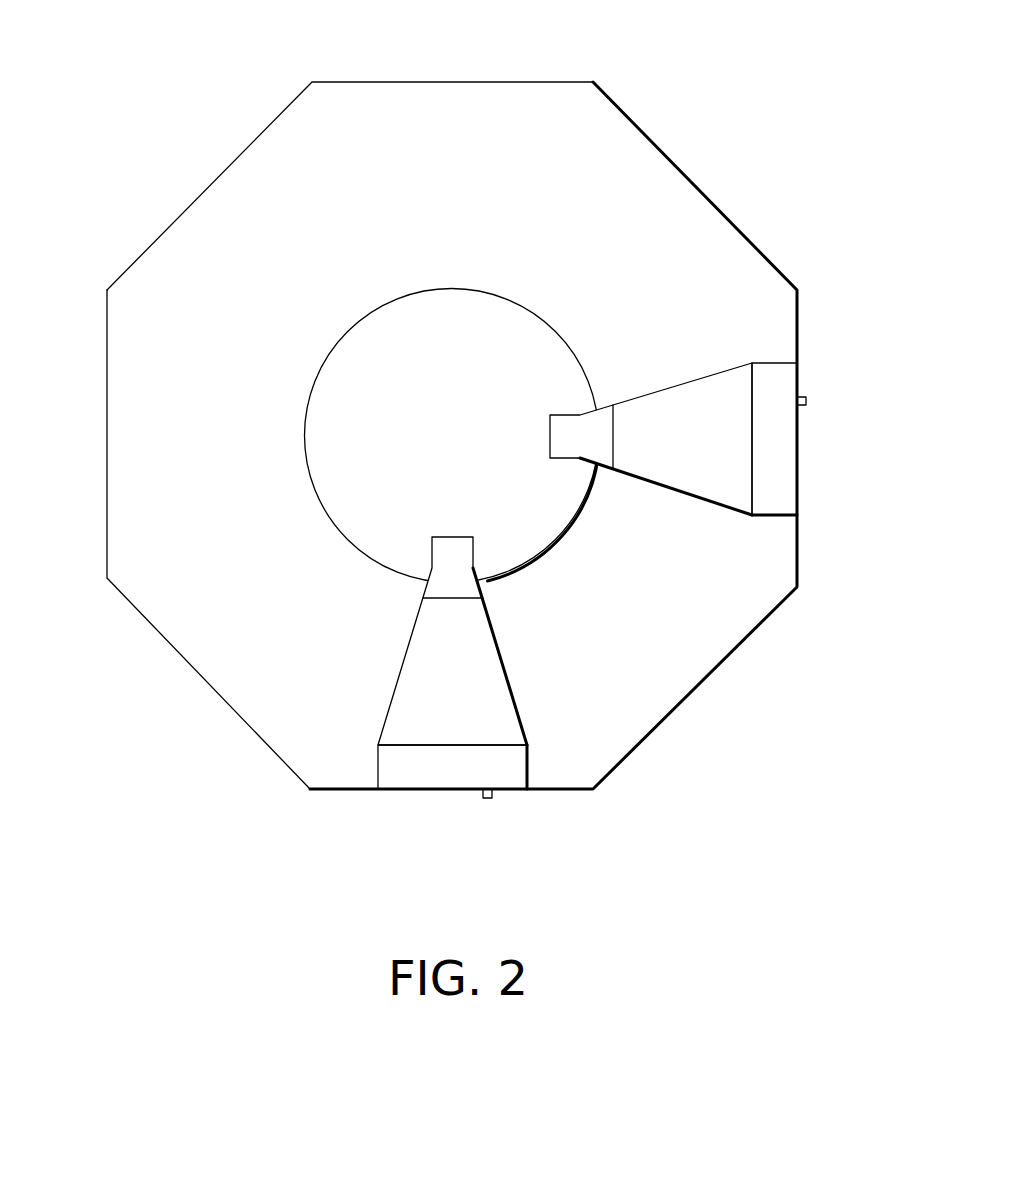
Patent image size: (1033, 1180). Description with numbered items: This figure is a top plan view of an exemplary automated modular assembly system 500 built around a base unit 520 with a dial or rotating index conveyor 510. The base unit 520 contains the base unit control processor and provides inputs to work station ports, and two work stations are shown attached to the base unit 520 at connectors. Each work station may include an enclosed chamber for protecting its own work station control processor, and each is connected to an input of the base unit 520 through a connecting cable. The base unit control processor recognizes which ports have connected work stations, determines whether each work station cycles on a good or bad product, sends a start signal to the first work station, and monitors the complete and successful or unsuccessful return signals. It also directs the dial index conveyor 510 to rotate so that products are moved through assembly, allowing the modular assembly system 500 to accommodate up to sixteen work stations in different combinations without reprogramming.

The automated modular assembly system 500 is at (176, 55).
The dial index conveyor 510 is at (460, 288).
The base unit 520 is at (213, 692).